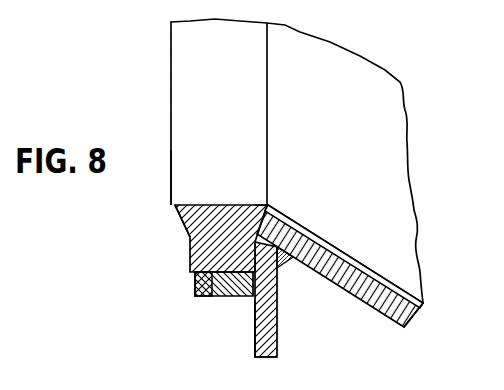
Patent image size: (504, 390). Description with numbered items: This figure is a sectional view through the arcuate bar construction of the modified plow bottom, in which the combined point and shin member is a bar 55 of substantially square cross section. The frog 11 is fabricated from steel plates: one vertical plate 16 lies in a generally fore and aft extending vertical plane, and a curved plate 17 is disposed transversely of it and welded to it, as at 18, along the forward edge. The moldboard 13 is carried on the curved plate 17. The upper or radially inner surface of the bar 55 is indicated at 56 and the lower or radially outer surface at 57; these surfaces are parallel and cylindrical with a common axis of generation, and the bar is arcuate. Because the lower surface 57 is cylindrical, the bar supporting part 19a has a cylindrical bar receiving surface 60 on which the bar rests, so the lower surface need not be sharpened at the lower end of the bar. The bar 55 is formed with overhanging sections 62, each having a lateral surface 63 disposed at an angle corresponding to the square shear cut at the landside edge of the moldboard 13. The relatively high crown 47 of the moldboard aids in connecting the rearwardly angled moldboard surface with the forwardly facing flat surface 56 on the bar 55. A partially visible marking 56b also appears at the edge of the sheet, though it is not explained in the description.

The frog 11 is at (252, 338).
The moldboard 13 is at (385, 82).
The vertical plate 16 is at (278, 343).
The curved plate 17 is at (385, 322).
The weld 18 is at (285, 260).
The bar supporting part 19a is at (193, 283).
The high crown 47 is at (427, 302).
The bar 55 is at (185, 250).
The upper surface 56 is at (173, 182).
The wall portion 56b is at (48, 386).
The lower surface 57 is at (205, 296).
The bar receiving surface 60 is at (215, 298).
The overhanging section 62 is at (265, 205).
The lateral surface 63 is at (177, 208).